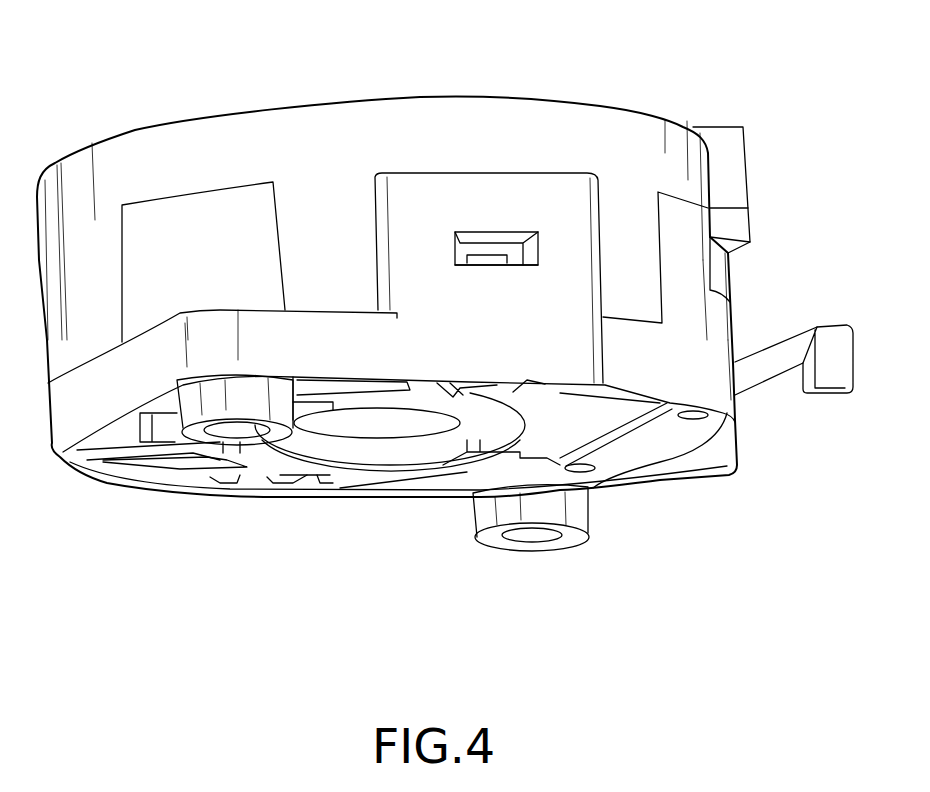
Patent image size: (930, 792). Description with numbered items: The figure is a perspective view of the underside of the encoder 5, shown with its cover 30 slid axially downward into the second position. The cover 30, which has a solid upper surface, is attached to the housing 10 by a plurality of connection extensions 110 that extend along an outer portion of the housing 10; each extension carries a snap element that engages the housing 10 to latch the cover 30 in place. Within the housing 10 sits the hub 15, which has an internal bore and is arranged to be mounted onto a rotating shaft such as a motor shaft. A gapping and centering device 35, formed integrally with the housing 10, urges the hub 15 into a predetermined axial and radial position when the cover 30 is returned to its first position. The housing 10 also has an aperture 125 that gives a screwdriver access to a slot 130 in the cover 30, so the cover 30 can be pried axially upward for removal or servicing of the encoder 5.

The encoder 5 is at (137, 513).
The housing 10 is at (687, 370).
The hub 15 is at (343, 428).
The cover 30 is at (570, 124).
The gapping and centering device 35 is at (382, 455).
The connection extensions 110 is at (347, 260).
The aperture 125 is at (522, 267).
The slot 130 is at (488, 260).